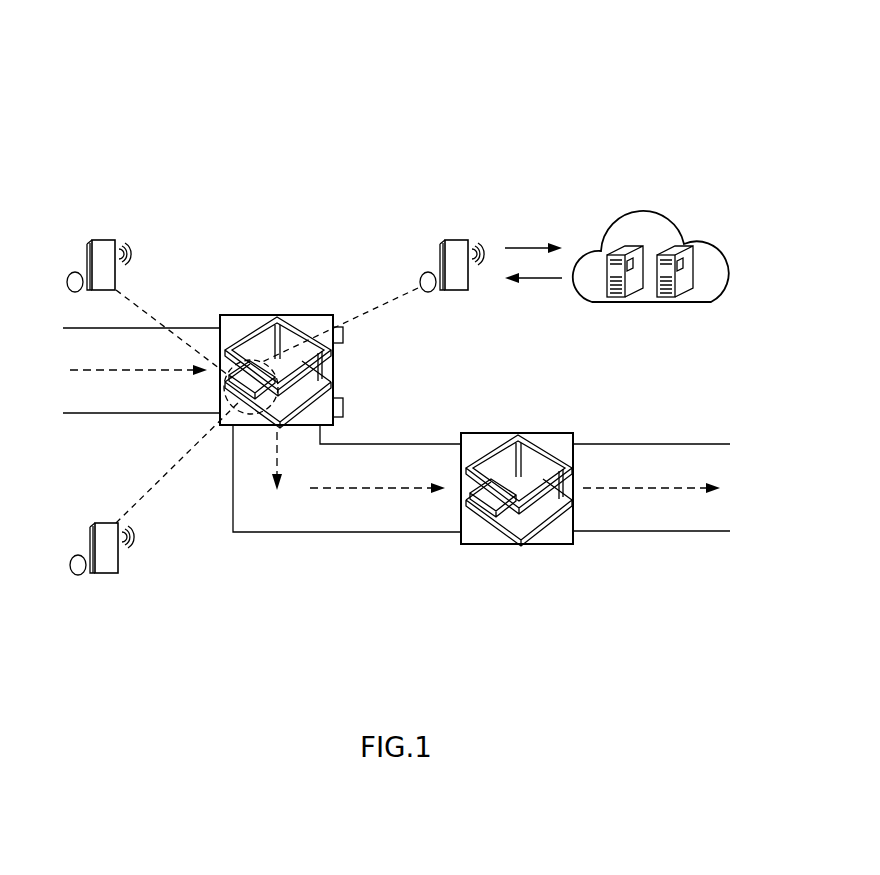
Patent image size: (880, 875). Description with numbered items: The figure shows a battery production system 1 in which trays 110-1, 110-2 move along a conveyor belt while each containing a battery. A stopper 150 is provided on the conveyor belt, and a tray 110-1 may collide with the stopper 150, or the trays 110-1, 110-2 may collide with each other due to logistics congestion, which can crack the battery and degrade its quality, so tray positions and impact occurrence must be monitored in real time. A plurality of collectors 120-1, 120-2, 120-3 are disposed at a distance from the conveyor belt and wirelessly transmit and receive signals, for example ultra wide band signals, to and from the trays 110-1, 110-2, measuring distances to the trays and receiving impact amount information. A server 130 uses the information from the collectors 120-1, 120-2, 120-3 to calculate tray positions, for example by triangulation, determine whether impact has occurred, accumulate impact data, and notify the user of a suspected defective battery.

The battery production system 1 is at (410, 96).
The tray 110-1 is at (277, 315).
The tray 110-2 is at (518, 433).
The collector 120-1 is at (103, 240).
The collector 120-2 is at (456, 240).
The collector 120-3 is at (105, 523).
The server 130 is at (643, 210).
The stopper 150 is at (343, 338).